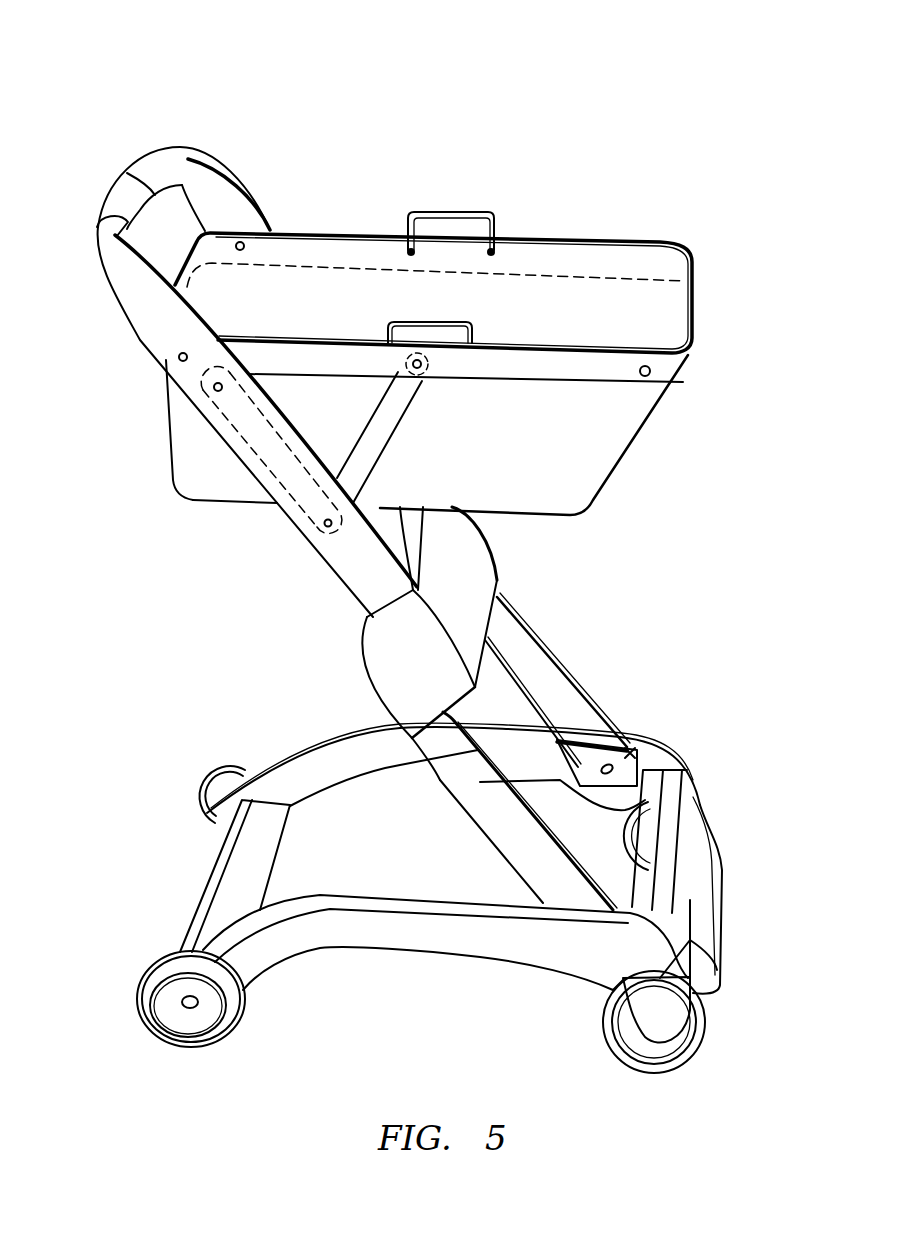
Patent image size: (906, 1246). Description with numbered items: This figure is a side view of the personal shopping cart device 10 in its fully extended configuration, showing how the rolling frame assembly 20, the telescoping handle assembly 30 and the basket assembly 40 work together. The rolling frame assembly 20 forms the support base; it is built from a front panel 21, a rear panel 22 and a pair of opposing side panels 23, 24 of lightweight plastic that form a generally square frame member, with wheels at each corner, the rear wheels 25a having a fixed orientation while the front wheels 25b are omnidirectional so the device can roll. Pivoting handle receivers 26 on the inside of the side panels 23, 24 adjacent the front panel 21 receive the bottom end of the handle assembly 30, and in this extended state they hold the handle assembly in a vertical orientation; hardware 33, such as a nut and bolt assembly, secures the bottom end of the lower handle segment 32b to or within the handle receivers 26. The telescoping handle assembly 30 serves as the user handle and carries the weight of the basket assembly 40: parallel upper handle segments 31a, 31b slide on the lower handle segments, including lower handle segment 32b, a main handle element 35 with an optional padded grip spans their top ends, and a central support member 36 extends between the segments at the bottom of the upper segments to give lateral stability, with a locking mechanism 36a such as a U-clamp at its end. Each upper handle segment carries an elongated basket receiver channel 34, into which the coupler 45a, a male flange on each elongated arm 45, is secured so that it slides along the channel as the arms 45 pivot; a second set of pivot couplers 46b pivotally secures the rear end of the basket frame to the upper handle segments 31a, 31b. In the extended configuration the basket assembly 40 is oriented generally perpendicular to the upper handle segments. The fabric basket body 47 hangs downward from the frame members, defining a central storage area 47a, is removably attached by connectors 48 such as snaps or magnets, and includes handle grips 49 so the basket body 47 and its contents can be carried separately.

The personal shopping cart device 10 is at (190, 92).
The rolling frame assembly 20 is at (740, 898).
The front panel 21 is at (667, 885).
The rear panel 22 is at (250, 867).
The side panel 23 is at (380, 765).
The side panel 24 is at (468, 950).
The rear wheels 25a is at (228, 770).
The front wheels 25b is at (707, 822).
The pivoting handle receivers 26 is at (630, 753).
The telescoping handle assembly 30 is at (627, 636).
The upper handle segment 31a is at (143, 313).
The upper handle segment 31b is at (212, 190).
The lower handle segment 32b is at (520, 645).
The hardware 33 is at (597, 752).
The elongated basket receiver channel 34 is at (272, 453).
The main handle element 35 is at (112, 195).
The central support member 36 is at (468, 589).
The locking mechanism 36a is at (423, 657).
The basket assembly 40 is at (714, 335).
The elongated arms 45 is at (387, 436).
The coupler 45a is at (326, 527).
The second set of pivot couplers 46b is at (243, 242).
The basket body 47 is at (521, 463).
The central storage area 47a is at (553, 298).
The connectors 48 is at (650, 373).
The handle grips 49 is at (453, 213).